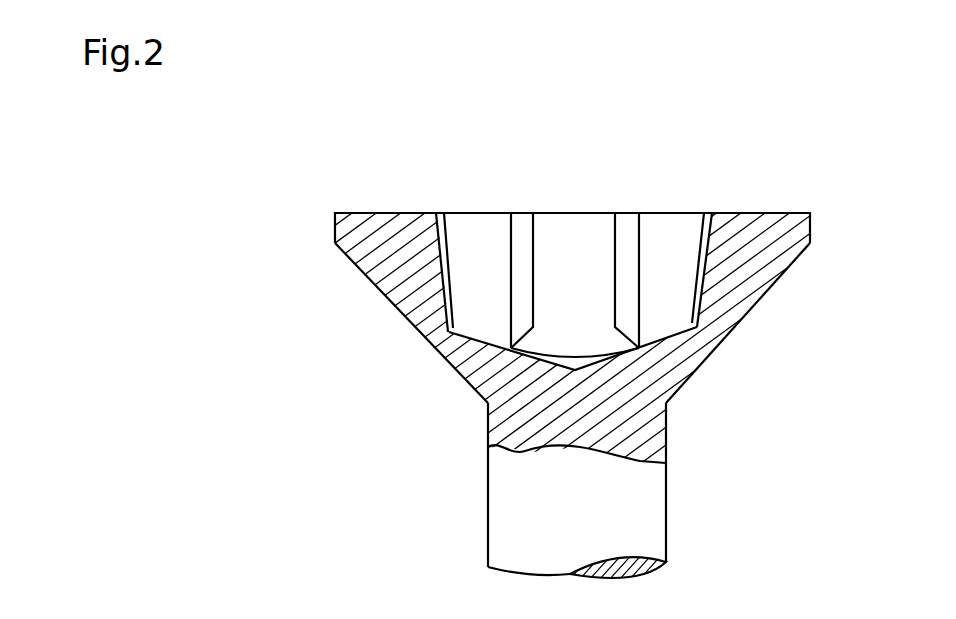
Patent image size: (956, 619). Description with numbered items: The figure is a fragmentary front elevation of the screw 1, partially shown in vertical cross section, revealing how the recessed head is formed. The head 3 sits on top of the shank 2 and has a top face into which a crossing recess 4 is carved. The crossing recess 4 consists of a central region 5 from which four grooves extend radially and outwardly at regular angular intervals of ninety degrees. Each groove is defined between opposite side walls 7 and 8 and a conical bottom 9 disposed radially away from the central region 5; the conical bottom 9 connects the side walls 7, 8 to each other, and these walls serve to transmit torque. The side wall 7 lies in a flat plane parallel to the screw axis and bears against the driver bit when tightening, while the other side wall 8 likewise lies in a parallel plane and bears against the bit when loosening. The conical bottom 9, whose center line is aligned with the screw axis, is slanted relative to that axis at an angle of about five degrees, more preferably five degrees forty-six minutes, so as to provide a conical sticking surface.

The screw 1 is at (384, 203).
The shank 2 is at (648, 501).
The head 3 is at (752, 278).
The crossing recess 4 is at (652, 198).
The central region 5 is at (578, 268).
The side wall 7 is at (477, 244).
The other side wall 8 is at (524, 245).
The conical bottom 9 is at (443, 256).